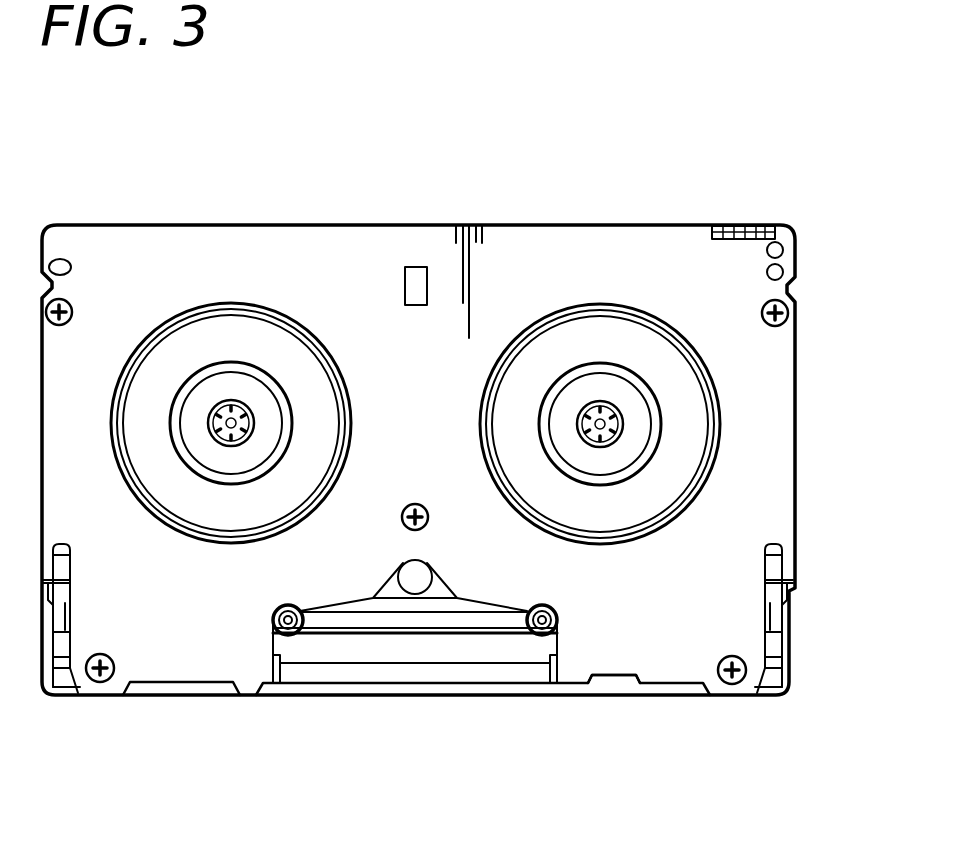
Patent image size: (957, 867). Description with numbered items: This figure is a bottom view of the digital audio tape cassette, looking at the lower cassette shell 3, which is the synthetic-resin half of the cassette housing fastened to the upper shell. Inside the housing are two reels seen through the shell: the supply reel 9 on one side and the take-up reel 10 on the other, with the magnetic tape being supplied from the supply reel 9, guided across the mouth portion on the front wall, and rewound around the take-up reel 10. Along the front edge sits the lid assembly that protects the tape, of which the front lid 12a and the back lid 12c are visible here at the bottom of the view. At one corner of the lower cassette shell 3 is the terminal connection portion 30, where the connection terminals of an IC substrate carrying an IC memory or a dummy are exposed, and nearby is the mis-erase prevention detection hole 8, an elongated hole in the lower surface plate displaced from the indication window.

The lower cassette shell 3 is at (373, 257).
The supply reel 9 is at (240, 332).
The take-up reel 10 is at (590, 332).
The terminal connection portion 30 is at (746, 216).
The mis-erase prevention detection hole 8 is at (783, 251).
The front lid 12a is at (383, 690).
The back lid 12c is at (321, 706).